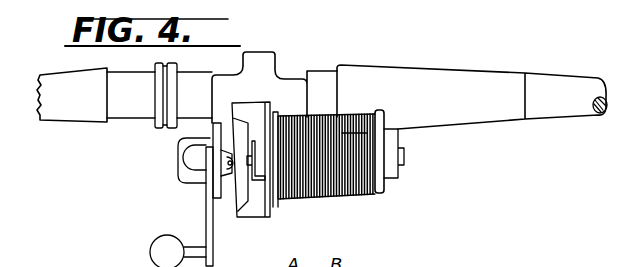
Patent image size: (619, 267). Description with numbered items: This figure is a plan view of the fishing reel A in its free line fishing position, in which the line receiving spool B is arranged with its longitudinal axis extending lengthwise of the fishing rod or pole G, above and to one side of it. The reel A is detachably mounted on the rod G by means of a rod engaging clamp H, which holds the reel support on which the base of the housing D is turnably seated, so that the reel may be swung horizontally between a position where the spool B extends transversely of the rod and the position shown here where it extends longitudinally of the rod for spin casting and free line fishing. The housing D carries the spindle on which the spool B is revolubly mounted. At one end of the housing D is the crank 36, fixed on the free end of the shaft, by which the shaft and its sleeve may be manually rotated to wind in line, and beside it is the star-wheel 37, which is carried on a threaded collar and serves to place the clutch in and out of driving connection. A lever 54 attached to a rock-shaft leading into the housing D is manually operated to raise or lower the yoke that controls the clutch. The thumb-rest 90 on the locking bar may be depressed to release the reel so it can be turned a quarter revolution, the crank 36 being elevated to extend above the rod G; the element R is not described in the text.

The rod engaging clamp H is at (273, 66).
The fishing rod or pole G is at (403, 68).
The rear cap R is at (398, 178).
The line receiving spool B is at (349, 199).
The housing D is at (257, 216).
The lever 54 is at (257, 182).
The fishing reel A is at (236, 227).
The star-wheel 37 is at (213, 190).
The thumb-rest 90 is at (180, 142).
The crank 36 is at (205, 216).